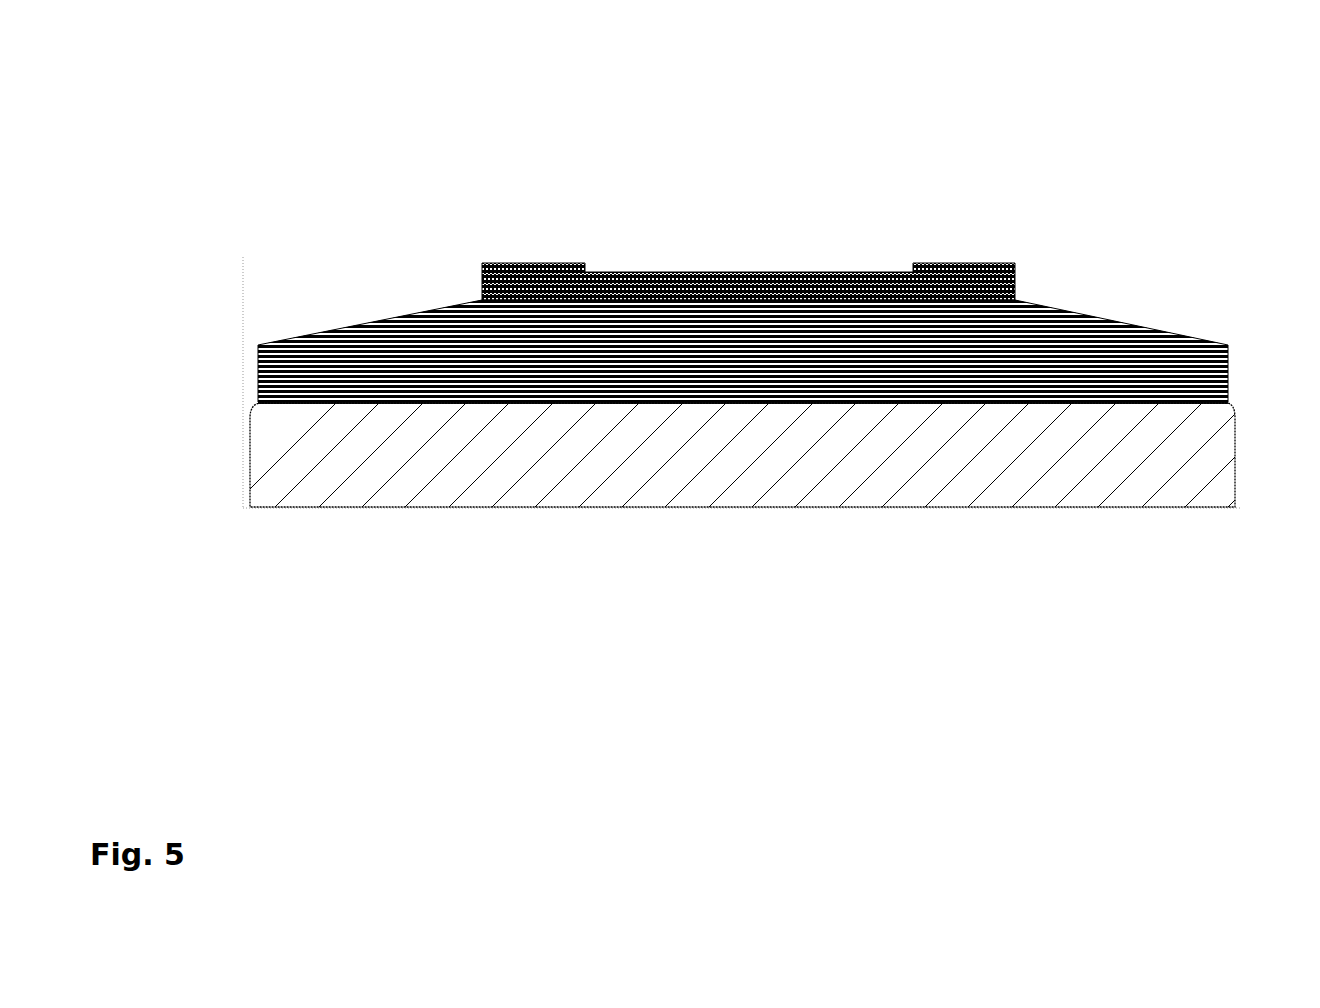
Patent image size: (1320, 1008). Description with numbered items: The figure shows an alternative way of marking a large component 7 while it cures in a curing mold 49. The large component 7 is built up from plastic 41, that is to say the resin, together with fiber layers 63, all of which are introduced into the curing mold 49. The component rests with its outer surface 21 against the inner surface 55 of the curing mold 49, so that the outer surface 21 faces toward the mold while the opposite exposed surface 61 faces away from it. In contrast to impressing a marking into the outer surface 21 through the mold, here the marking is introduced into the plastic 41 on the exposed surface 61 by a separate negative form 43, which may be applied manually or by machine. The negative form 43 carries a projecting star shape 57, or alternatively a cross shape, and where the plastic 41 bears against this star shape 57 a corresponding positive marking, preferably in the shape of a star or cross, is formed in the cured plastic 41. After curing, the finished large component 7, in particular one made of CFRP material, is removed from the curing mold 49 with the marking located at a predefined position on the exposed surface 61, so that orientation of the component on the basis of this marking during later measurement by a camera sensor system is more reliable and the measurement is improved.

The large component 7 is at (284, 316).
The outer surface 21 is at (737, 402).
The plastic 41 is at (1043, 315).
The negative form 43 is at (663, 280).
The curing mold 49 is at (570, 458).
The inner surface 55 is at (737, 402).
The star shape 57 is at (760, 310).
The exposed surface 61 is at (432, 312).
The fiber layers 63 is at (1207, 375).